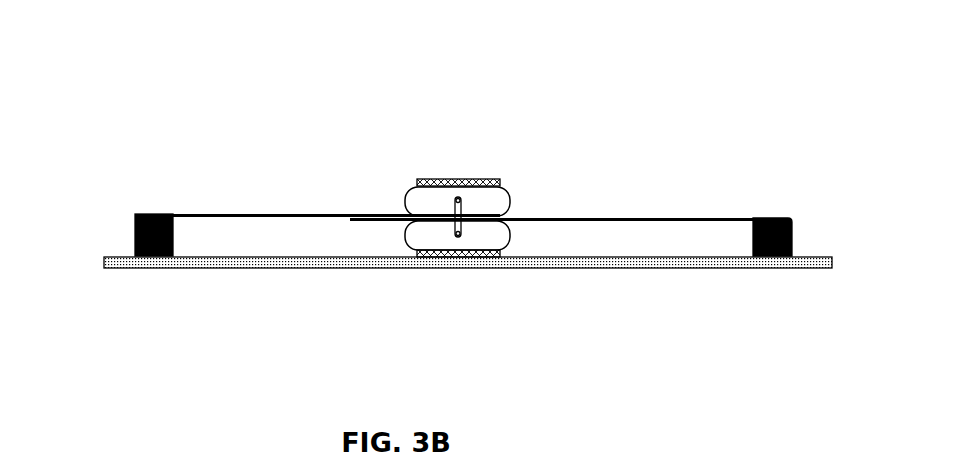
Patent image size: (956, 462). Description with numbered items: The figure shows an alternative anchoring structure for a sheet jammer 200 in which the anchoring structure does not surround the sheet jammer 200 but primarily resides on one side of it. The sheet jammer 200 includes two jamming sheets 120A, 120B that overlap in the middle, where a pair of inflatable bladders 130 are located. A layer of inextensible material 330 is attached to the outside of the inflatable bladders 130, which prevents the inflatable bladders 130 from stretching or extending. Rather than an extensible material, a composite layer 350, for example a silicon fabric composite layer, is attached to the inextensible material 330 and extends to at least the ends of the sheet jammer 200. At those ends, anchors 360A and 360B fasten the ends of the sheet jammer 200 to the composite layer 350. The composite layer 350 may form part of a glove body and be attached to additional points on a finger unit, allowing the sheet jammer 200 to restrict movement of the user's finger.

The sheet jammer 200 is at (131, 258).
The composite layer 350 is at (289, 271).
The anchor 360A is at (158, 210).
The anchor 360B is at (763, 213).
The jamming sheet 120A is at (256, 210).
The jamming sheet 120B is at (618, 213).
The inflatable bladders 130 is at (494, 183).
The inextensible material 330 is at (442, 179).